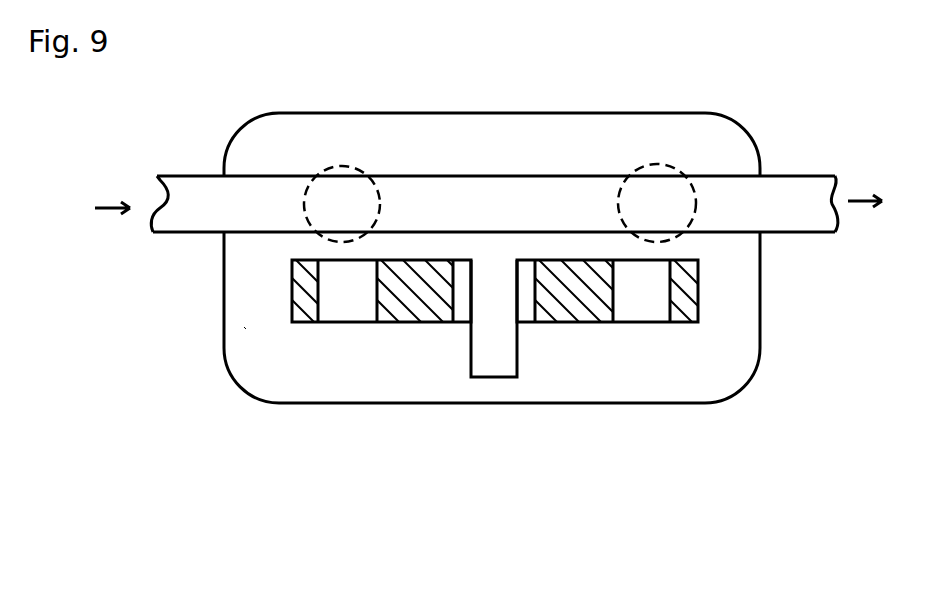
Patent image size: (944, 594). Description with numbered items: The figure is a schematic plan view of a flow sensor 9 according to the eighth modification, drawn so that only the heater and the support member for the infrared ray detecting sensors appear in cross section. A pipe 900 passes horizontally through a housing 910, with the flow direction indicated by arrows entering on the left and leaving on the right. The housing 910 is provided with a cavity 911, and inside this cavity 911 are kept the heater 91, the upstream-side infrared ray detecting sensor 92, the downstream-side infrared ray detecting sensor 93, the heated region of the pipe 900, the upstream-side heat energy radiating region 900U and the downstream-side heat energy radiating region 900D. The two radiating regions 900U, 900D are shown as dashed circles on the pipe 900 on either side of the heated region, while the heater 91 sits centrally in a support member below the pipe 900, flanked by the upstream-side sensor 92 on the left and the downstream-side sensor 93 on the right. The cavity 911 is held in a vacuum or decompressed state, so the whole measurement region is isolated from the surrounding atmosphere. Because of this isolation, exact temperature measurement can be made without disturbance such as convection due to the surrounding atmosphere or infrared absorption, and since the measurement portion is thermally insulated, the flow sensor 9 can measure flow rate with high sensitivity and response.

The flow sensor 9 is at (213, 443).
The housing 910 is at (760, 365).
The cavity 911 is at (244, 327).
The pipe 900 is at (510, 176).
The upstream-side heat energy radiating region 900U is at (343, 166).
The downstream-side heat energy radiating region 900D is at (657, 165).
The heater 91 is at (500, 377).
The upstream-side infrared ray detecting sensor 92 is at (344, 322).
The downstream-side infrared ray detecting sensor 93 is at (640, 322).